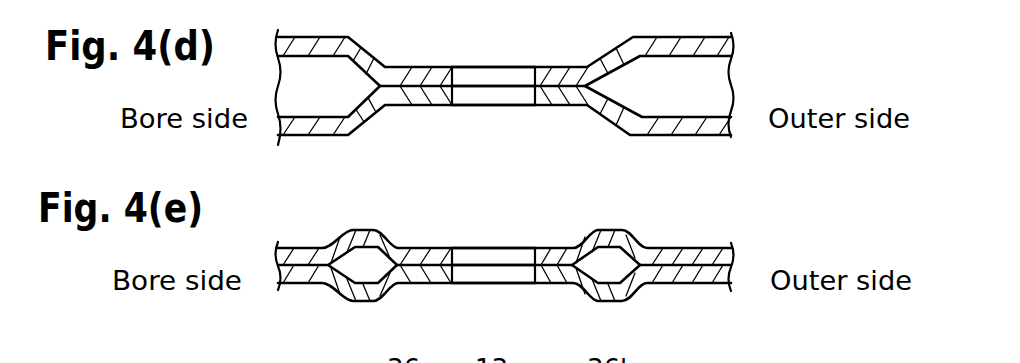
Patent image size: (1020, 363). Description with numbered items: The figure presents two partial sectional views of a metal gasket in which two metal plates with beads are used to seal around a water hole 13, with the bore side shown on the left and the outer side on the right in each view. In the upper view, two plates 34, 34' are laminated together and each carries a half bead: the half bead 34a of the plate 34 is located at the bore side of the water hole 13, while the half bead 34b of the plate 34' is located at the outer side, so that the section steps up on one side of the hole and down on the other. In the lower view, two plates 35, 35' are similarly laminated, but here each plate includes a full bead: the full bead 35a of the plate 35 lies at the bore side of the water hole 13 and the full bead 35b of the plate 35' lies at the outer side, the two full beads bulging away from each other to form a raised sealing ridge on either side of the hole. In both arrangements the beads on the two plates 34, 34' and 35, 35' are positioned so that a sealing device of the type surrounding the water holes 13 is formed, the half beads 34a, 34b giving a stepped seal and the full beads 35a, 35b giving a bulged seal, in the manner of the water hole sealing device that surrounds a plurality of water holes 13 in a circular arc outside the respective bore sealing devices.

In FIG. 4D, the water hole 13 is at (509, 63).
In FIG. 4E, the water hole 13 is at (497, 246).
In FIG. 4D, the plate 34 is at (546, 58).
In FIG. 4D, the plate 34' is at (509, 148).
In FIG. 4D, the half bead 34a is at (363, 41).
In FIG. 4D, the half bead 34b is at (616, 38).
In FIG. 4E, the plate 35 is at (534, 226).
In FIG. 4E, the plate 35' is at (529, 299).
In FIG. 4E, the full bead 35a is at (384, 229).
In FIG. 4E, the full bead 35b is at (597, 229).